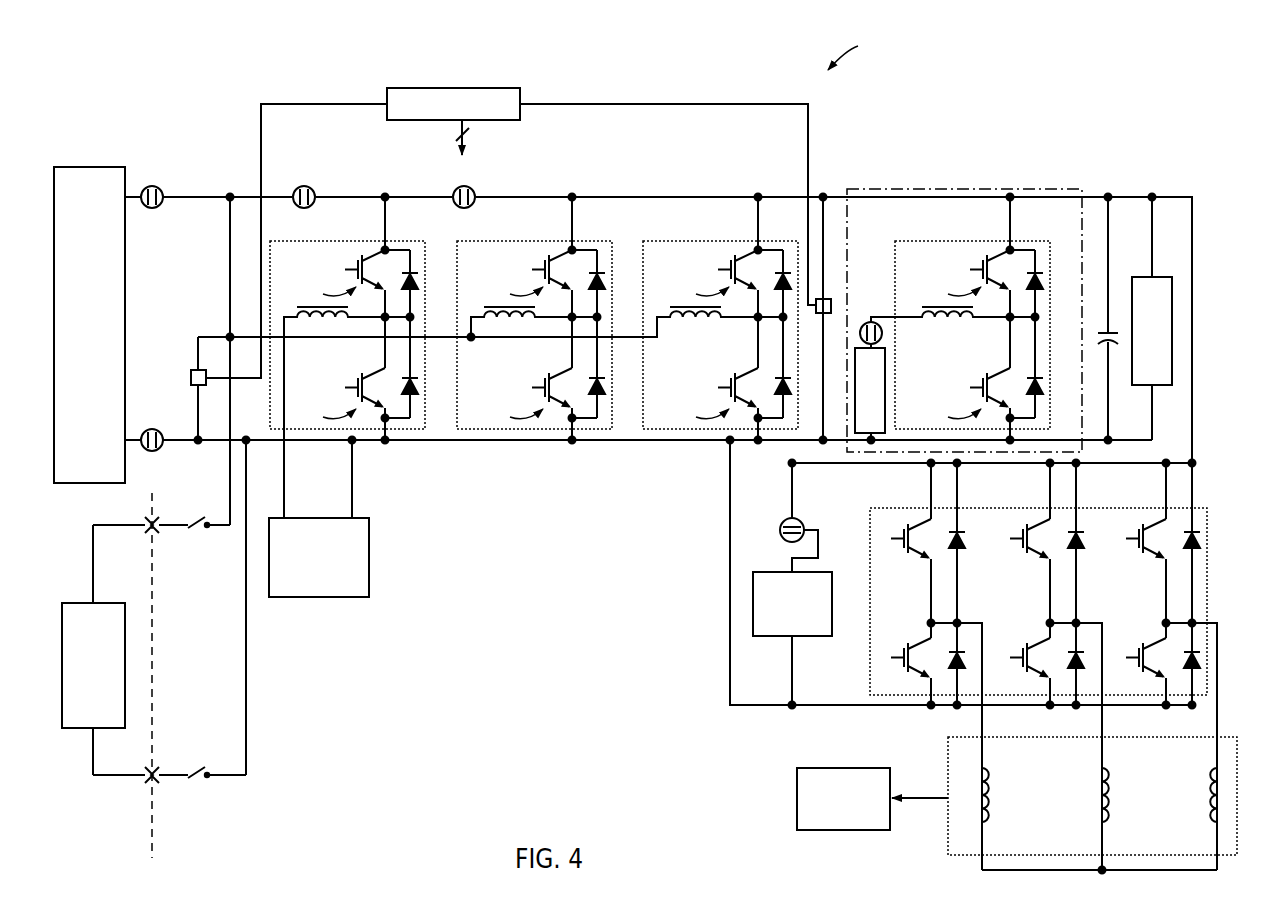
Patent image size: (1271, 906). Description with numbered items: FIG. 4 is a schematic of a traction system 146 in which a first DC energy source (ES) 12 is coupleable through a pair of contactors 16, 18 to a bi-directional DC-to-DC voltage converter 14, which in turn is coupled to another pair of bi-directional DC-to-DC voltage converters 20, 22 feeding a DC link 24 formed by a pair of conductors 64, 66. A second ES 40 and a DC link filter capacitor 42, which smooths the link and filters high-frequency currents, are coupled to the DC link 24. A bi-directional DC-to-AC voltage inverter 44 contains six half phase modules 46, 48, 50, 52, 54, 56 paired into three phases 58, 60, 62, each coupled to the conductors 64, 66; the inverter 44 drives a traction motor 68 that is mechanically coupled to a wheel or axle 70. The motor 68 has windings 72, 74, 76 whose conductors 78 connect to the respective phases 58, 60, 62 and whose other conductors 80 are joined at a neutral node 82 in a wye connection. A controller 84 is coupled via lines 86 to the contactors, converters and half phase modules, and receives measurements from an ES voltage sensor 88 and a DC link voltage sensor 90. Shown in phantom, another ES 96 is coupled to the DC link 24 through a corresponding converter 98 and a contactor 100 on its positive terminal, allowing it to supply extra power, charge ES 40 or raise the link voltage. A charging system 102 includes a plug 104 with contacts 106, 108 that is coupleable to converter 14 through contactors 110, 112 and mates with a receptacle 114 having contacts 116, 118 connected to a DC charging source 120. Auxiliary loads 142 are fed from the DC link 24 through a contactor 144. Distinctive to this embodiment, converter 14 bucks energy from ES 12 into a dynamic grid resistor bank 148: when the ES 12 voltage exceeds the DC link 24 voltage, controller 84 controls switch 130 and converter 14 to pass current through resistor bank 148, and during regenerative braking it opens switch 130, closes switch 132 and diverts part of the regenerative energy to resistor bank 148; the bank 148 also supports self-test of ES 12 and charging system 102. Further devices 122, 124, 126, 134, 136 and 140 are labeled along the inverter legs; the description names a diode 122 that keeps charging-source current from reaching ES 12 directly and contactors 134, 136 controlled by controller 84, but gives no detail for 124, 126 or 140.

The first DC energy source (ES) 12 is at (88, 167).
The bi-directional DC-to-DC voltage converter 14 is at (347, 356).
The contactor or switch 16 is at (147, 186).
The contactor or switch 18 is at (147, 429).
The bi-directional DC-to-DC voltage converter 20 is at (549, 319).
The bi-directional DC-to-DC voltage converter 22 is at (720, 319).
The DC link or bus 24 is at (654, 197).
The second ES 40 is at (1147, 277).
The DC link filter capacitor 42 is at (1102, 330).
The bi-directional DC-to-AC voltage inverter 44 is at (871, 514).
The half phase module 46 is at (898, 559).
The half phase module 48 is at (898, 678).
The half phase module 50 is at (1017, 559).
The half phase module 52 is at (1017, 678).
The half phase module 54 is at (1128, 559).
The half phase module 56 is at (1133, 678).
The phase 58 is at (944, 665).
The phase 60 is at (1057, 665).
The phase 62 is at (1171, 665).
The conductor of DC link 64 is at (620, 197).
The conductor of DC link 66 is at (669, 440).
The electromechanical device or motor 68 is at (1072, 805).
The driving wheel or axle 70 is at (797, 797).
The winding 72 is at (990, 801).
The winding 74 is at (1109, 802).
The winding 76 is at (1217, 783).
The conductor 78 is at (984, 767).
The conductor 80 is at (985, 846).
The common or neutral node 82 is at (1050, 870).
The controller 84 is at (398, 88).
The line 86 is at (466, 128).
The ES voltage sensor 88 is at (191, 376).
The DC link voltage sensor 90 is at (832, 298).
The ES 96 is at (855, 380).
The bi-directional DC-to-DC voltage converter 98 is at (975, 319).
The contactor or switch 100 is at (862, 322).
The charging system 102 is at (195, 675).
The plug 104 is at (161, 826).
The contact 106 is at (157, 525).
The contact 108 is at (154, 778).
The contactor or switch 110 is at (189, 530).
The contactor or switch 112 is at (190, 779).
The receptacle or plug 114 is at (144, 816).
The contact 116 is at (149, 529).
The contact 118 is at (148, 770).
The DC charging source 120 is at (73, 603).
The diode 122 is at (963, 548).
The traction system 124 is at (1082, 548).
The phase c upper diode 126 is at (1198, 548).
The contactor or switch 130 is at (297, 186).
The contactor or switch 132 is at (458, 186).
The contactor or switch 134 is at (957, 666).
The contactor or switch 136 is at (1076, 666).
The phase c lower diode 140 is at (1192, 666).
The auxiliary load 142 is at (760, 636).
The contactor or switch 144 is at (782, 523).
The traction system 146 is at (860, 52).
The dynamic grid resistor bank 148 is at (340, 597).